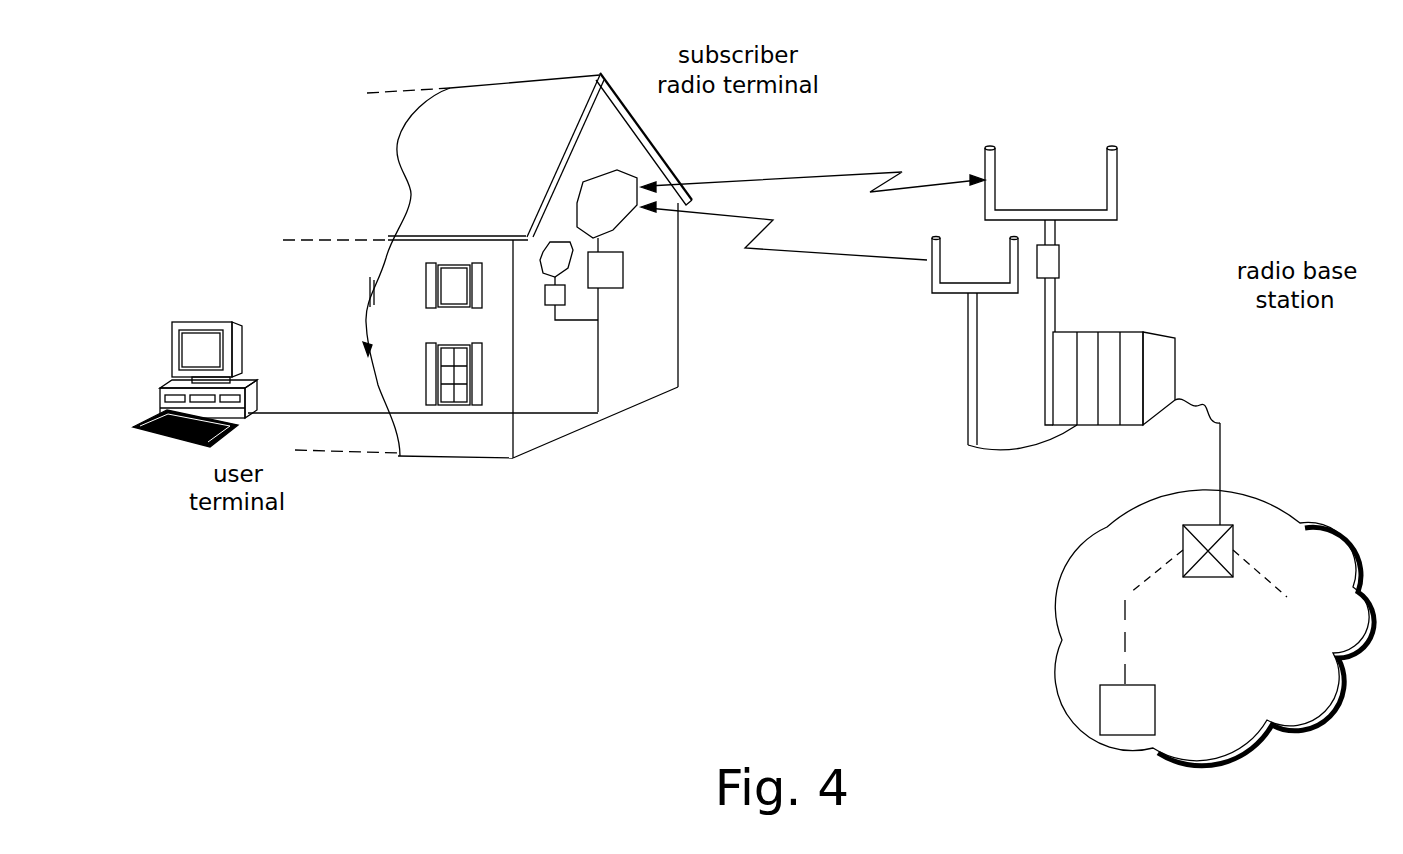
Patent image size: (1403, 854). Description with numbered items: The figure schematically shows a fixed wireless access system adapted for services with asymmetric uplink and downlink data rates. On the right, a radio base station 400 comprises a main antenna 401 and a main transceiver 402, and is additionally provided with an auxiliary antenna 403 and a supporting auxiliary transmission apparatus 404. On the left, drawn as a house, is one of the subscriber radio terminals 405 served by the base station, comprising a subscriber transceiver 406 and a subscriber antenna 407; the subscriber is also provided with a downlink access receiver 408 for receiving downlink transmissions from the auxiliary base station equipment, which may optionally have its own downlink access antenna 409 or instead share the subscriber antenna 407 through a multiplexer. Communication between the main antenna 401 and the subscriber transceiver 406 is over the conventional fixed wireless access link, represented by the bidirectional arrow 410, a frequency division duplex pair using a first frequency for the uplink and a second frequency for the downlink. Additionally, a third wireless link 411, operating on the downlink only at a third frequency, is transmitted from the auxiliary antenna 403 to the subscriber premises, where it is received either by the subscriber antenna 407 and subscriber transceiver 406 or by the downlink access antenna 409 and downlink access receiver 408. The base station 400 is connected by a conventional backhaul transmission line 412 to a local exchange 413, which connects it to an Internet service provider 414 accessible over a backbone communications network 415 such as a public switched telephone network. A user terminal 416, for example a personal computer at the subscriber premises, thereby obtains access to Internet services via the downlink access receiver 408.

The radio base station 400 is at (1062, 308).
The main antenna 401 is at (1057, 290).
The main transceiver 402 is at (1062, 343).
The auxiliary antenna 403 is at (968, 387).
The auxiliary transmission apparatus 404 is at (1168, 363).
The subscriber radio terminal 405 is at (560, 477).
The subscriber transceiver 406 is at (617, 288).
The subscriber antenna 407 is at (613, 171).
The downlink access receiver 408 is at (551, 303).
The downlink access antenna 409 is at (550, 238).
The bidirectional arrow 410 is at (835, 172).
The third wireless link 411 is at (802, 252).
The backhaul transmission line 412 is at (1221, 470).
The local exchange 413 is at (1235, 548).
The Internet service provider 414 is at (1100, 705).
The backbone communications network 415 is at (1194, 628).
The user terminal 416 is at (257, 382).